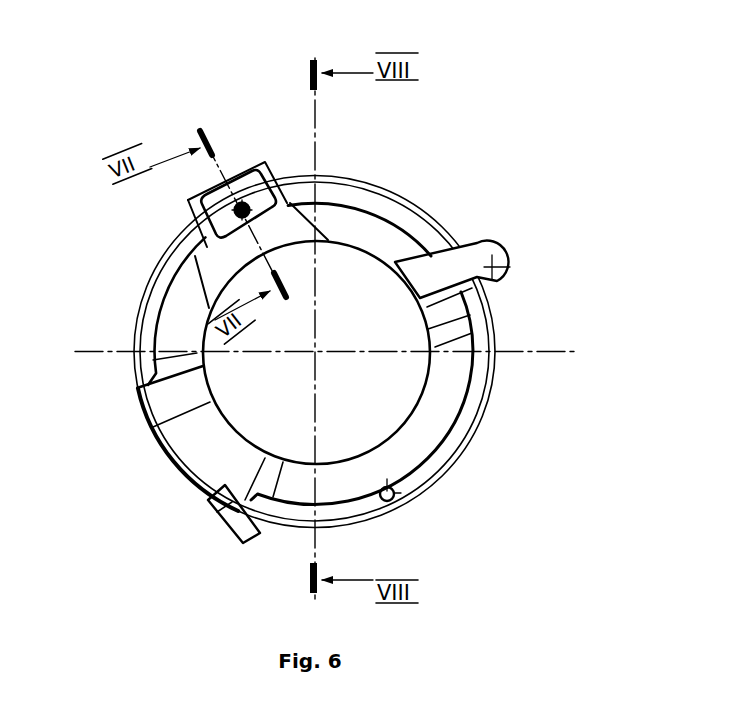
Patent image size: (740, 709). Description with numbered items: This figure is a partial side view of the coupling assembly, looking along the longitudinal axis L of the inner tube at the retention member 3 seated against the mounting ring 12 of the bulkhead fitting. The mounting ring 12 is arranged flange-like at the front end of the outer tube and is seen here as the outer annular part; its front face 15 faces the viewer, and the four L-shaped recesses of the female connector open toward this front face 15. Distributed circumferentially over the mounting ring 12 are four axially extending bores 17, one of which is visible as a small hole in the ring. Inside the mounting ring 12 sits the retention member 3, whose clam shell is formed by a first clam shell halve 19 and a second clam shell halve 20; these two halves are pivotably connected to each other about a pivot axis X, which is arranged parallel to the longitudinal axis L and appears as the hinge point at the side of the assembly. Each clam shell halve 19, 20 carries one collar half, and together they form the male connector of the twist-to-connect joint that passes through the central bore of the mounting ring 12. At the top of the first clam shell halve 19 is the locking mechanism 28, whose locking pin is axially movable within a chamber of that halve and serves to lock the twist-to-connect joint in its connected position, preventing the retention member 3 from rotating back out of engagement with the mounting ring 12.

The retention member 3 is at (158, 444).
The mounting ring 12 is at (427, 203).
The front face 15 is at (375, 189).
The axially extending bores 17 is at (403, 503).
The first clam shell halve 19 is at (167, 308).
The second clam shell halve 20 is at (452, 396).
The locking mechanism 28 is at (243, 173).
The pivot axis X is at (495, 252).
The longitudinal axis L is at (318, 348).